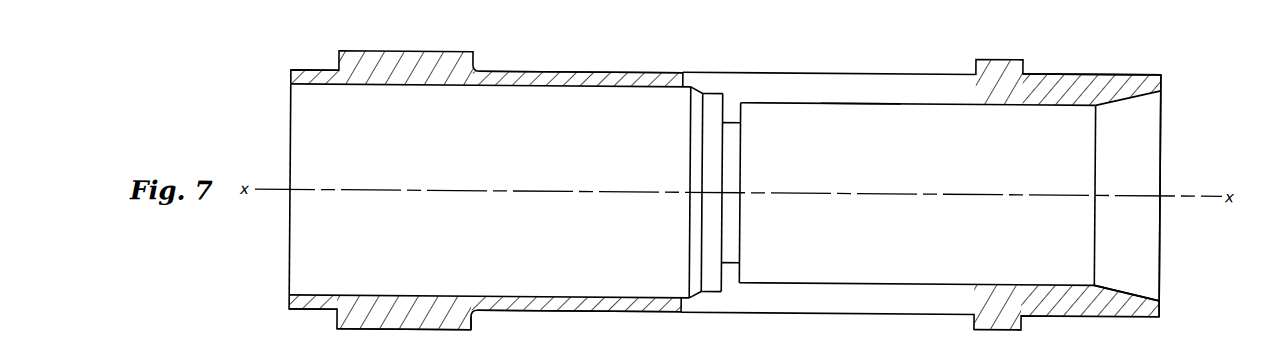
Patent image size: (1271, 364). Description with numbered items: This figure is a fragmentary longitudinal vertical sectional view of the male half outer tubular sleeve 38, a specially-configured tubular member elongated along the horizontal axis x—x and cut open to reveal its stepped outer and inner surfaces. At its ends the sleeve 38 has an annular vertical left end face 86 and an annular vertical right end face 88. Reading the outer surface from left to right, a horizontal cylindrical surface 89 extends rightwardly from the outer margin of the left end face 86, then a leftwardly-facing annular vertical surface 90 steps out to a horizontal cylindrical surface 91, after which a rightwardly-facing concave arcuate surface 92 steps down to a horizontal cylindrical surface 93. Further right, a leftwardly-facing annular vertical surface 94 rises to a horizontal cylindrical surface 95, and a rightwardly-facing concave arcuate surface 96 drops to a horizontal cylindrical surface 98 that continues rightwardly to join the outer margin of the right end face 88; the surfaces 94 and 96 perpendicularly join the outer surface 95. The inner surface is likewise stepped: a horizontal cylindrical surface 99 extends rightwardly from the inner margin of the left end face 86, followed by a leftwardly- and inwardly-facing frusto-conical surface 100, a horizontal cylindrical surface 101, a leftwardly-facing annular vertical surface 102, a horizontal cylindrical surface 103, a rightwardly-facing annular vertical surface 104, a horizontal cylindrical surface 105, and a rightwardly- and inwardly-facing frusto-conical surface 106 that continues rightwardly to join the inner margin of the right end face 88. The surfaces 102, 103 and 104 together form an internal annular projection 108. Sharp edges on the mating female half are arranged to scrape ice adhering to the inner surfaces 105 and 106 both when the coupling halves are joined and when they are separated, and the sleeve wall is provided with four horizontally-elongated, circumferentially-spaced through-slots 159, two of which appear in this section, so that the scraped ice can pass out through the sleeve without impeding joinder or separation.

The male half sleeve 38 is at (921, 183).
The left end face 86 is at (445, 191).
The right end face 88 is at (1208, 196).
The horizontal cylindrical surface 89 is at (295, 50).
The leftwardly-facing annular vertical surface 90 is at (302, 330).
The horizontal cylindrical surface 91 is at (404, 345).
The rightwardly-facing concave arcuate surface 92 is at (505, 331).
The horizontal cylindrical surface 93 is at (579, 330).
The leftwardly-facing annular vertical surface 94 is at (1037, 319).
The horizontal cylindrical surface 95 is at (1018, 343).
The rightwardly-facing concave arcuate surface 96 is at (1069, 69).
The horizontal cylindrical surface 98 is at (1108, 54).
The horizontal cylindrical surface 99 is at (580, 104).
The leftwardly- and inwardly-facing frusto-conical surface 100 is at (676, 192).
The horizontal cylindrical surface 101 is at (665, 280).
The leftwardly-facing annular vertical surface 102 is at (675, 263).
The horizontal cylindrical surface 103 is at (767, 158).
The rightwardly-facing annular vertical surface 104 is at (768, 238).
The horizontal cylindrical surface 105 is at (888, 133).
The rightwardly- and inwardly-facing frusto-conical surface 106 is at (1162, 281).
The internal annular projection 108 is at (787, 79).
The through-slots 159 is at (917, 195).